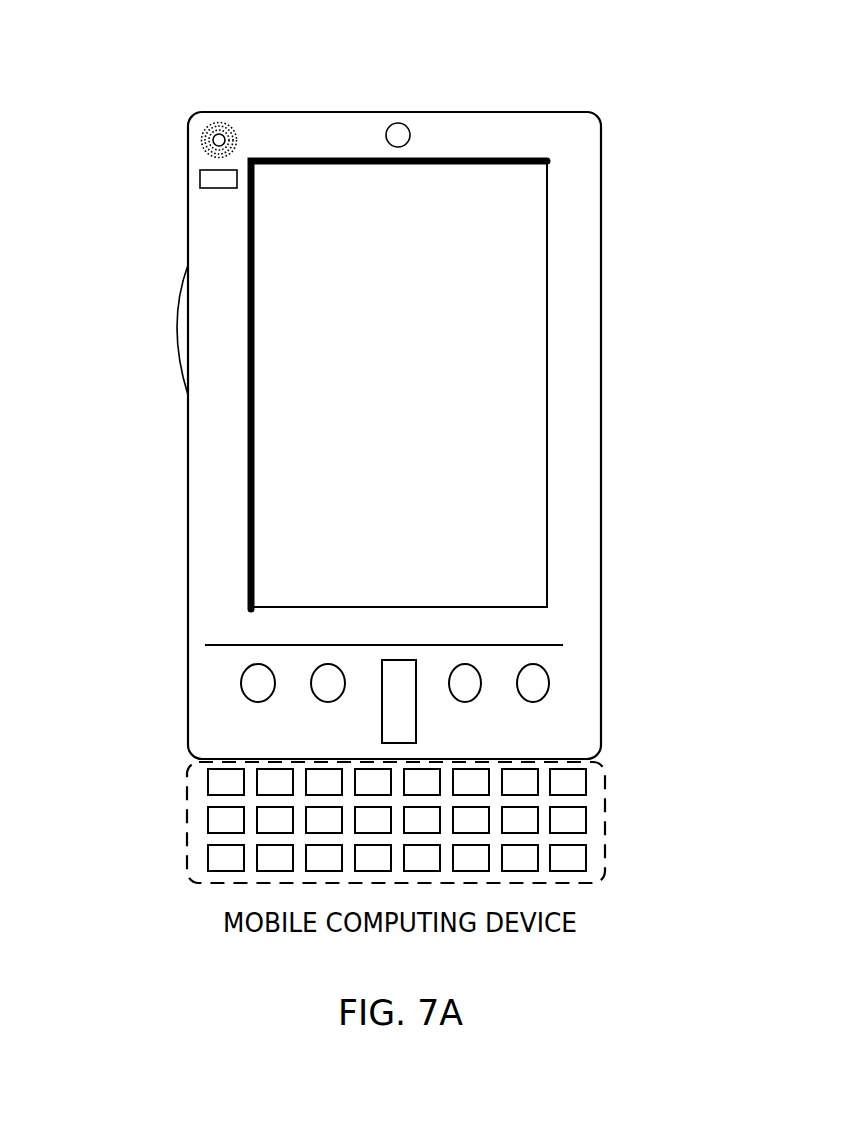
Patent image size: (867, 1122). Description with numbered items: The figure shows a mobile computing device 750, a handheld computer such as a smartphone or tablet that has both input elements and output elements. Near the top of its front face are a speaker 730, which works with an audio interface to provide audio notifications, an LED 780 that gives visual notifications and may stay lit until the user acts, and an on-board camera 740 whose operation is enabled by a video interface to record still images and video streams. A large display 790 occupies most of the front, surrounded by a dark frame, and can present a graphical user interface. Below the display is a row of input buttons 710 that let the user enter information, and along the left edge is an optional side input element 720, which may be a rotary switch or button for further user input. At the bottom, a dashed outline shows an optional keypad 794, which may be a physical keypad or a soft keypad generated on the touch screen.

The input buttons 710 is at (537, 693).
The side input element 720 is at (166, 341).
The speaker 730 is at (200, 127).
The on-board camera 740 is at (408, 130).
The mobile computing device 750 is at (602, 128).
The LED 780 is at (200, 171).
The display screen 790 is at (275, 545).
The keyboard 794 is at (187, 850).